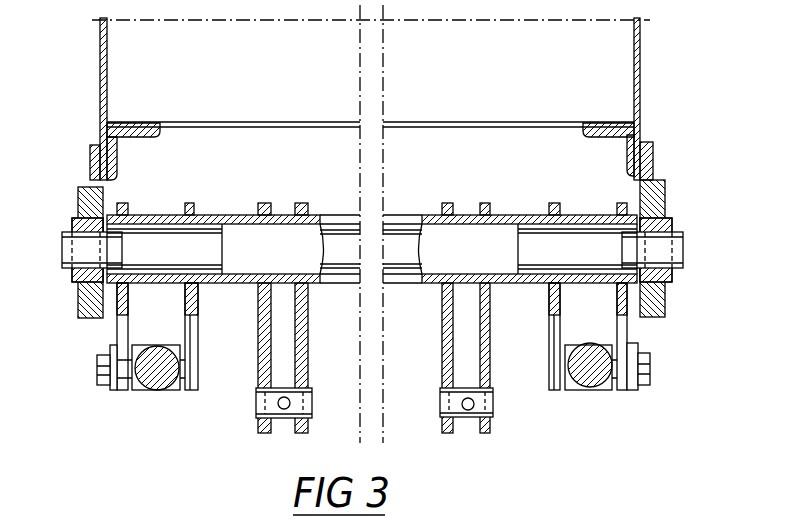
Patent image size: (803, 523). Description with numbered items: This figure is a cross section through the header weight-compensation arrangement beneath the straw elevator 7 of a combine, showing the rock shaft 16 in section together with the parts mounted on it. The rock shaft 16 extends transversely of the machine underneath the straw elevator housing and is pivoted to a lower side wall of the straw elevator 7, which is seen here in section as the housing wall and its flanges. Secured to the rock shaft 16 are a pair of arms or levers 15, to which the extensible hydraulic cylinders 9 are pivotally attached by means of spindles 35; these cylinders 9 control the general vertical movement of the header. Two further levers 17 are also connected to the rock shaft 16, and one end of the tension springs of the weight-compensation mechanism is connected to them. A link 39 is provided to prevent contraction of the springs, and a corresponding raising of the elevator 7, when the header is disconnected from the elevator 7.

The straw elevator 7 is at (100, 86).
The extensible hydraulic cylinder 9 is at (175, 391).
The arm or lever 15 is at (186, 305).
The rock shaft 16 is at (323, 284).
The further lever 17 is at (258, 328).
The spindle 35 is at (103, 386).
The link 39 is at (112, 392).